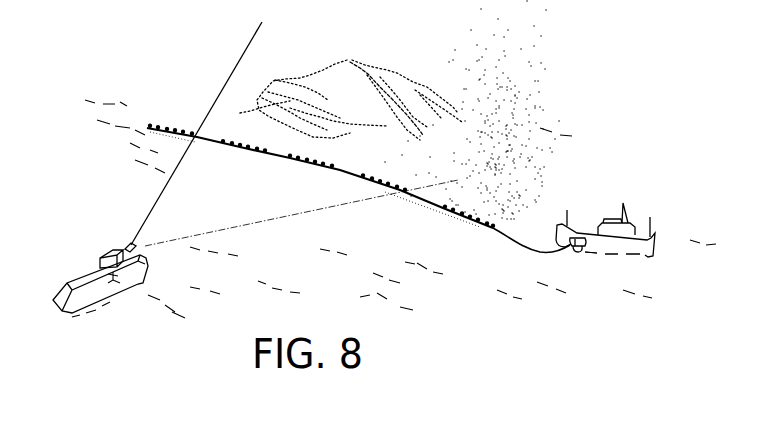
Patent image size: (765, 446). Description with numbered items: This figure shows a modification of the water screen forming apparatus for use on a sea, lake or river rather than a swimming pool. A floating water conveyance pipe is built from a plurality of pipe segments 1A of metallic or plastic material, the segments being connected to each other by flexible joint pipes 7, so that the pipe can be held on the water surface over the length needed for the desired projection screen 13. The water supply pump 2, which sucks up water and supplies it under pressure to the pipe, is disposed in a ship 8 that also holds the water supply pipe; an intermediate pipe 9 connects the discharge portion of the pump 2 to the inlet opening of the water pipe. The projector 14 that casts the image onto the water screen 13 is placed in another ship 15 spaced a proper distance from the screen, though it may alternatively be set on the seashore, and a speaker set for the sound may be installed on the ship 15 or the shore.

The pipe segments 1A is at (240, 150).
The water supply pump 2 is at (578, 253).
The flexible joint pipes 7 is at (345, 172).
The ship 8 is at (657, 237).
The intermediate pipe 9 is at (532, 254).
The projection screen 13 is at (528, 70).
The projector 14 is at (110, 250).
The ship 15 is at (113, 297).